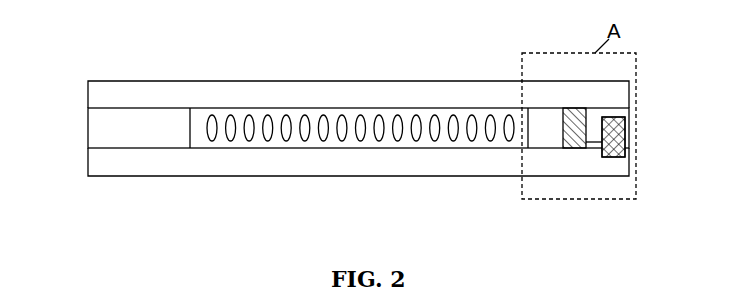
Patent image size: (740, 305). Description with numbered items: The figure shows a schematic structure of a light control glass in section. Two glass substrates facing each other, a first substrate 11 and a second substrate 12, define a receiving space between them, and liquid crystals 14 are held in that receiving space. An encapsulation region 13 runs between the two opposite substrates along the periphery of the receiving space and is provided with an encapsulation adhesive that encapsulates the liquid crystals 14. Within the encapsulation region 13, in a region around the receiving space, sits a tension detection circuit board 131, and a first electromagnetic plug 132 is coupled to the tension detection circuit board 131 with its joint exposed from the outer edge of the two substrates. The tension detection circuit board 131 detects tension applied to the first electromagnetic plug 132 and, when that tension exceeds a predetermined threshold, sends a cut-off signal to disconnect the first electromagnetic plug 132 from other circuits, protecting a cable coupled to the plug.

The first substrate 11 is at (258, 81).
The second substrate 12 is at (275, 176).
The encapsulation region 13 is at (106, 132).
The liquid crystals 14 is at (382, 122).
The tension detection circuit board 131 is at (577, 122).
The first electromagnetic plug 132 is at (627, 133).